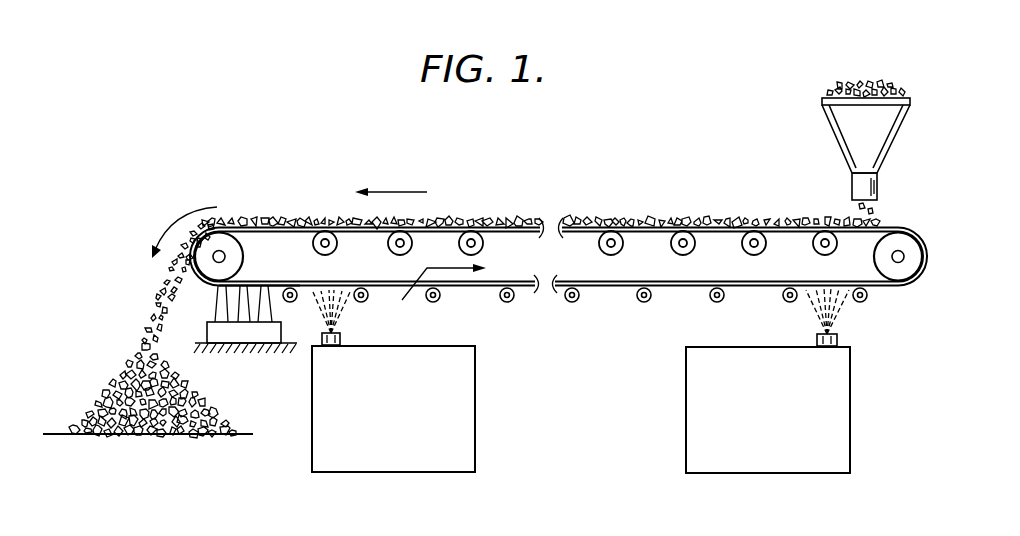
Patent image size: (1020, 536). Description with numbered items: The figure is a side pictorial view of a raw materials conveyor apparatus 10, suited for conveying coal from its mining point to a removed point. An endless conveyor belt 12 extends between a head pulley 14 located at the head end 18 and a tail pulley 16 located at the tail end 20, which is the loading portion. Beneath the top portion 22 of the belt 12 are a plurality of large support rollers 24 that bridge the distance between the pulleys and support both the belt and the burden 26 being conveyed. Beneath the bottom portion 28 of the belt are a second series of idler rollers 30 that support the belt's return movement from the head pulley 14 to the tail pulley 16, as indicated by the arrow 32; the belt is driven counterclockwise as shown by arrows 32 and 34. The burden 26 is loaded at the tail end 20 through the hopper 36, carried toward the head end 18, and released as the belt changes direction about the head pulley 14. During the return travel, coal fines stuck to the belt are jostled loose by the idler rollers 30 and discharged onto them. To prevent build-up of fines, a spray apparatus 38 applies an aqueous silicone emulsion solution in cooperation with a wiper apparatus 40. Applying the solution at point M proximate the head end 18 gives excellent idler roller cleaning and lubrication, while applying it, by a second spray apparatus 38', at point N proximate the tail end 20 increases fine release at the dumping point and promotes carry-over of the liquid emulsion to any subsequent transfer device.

The conveyor apparatus 10 is at (634, 326).
The endless conveyor belt 12 is at (755, 289).
The head pulley 14 is at (223, 240).
The tail pulley 16 is at (903, 273).
The head end 18 is at (177, 205).
The tail end 20 is at (918, 216).
The top portion of belt 22 is at (583, 225).
The support rollers 24 is at (380, 258).
The burden 26 is at (100, 387).
The bottom portion of belt 28 is at (607, 289).
The idler rollers 30 is at (486, 312).
The arrow indicating belt return direction 32 is at (433, 296).
The arrow indicating belt carrying direction 34 is at (397, 191).
The hopper 36 is at (897, 137).
The spray apparatus 38 is at (420, 381).
The spray apparatus 38' is at (734, 380).
The wiper apparatus 40 is at (255, 335).
The application point M is at (271, 250).
The application point N is at (805, 310).